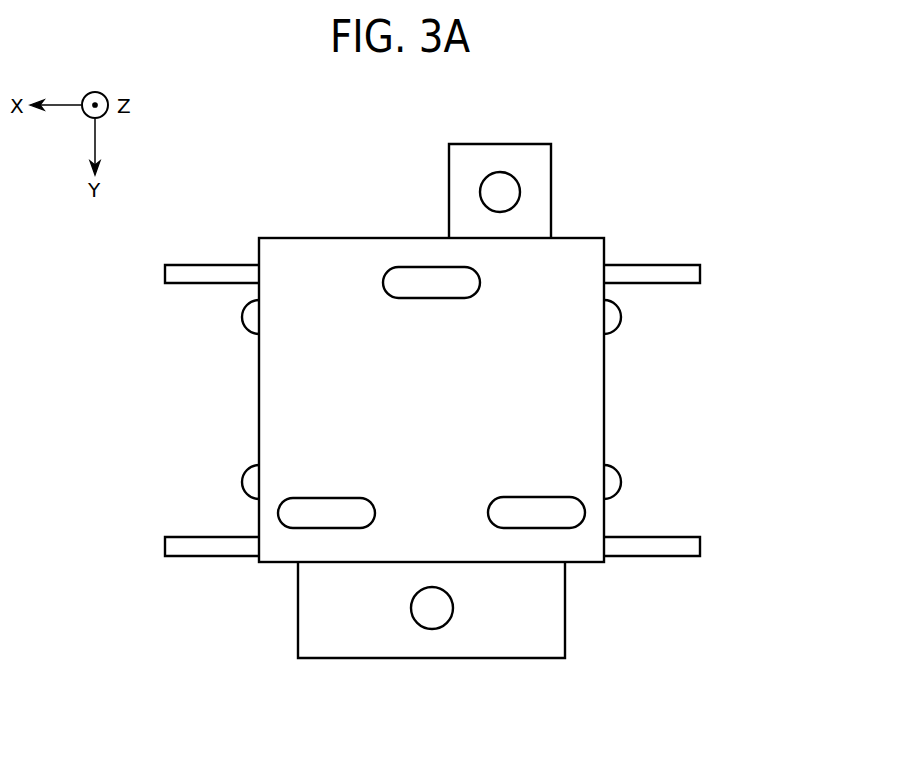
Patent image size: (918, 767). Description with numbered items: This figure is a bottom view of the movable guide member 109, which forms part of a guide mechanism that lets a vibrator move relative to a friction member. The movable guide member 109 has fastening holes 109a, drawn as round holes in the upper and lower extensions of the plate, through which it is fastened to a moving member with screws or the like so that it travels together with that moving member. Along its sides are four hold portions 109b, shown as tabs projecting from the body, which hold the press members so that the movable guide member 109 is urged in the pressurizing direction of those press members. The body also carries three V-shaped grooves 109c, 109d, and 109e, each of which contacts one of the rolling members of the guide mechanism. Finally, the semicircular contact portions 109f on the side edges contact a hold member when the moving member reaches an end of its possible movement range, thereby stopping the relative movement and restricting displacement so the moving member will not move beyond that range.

The movable guide member 109 is at (300, 238).
The fastening holes 109a is at (498, 183).
The hold portions 109b is at (178, 276).
The V-shaped groove 109c is at (290, 513).
The V-shaped groove 109d is at (565, 513).
The V-shaped groove 109e is at (458, 286).
The contact portions 109f is at (245, 317).